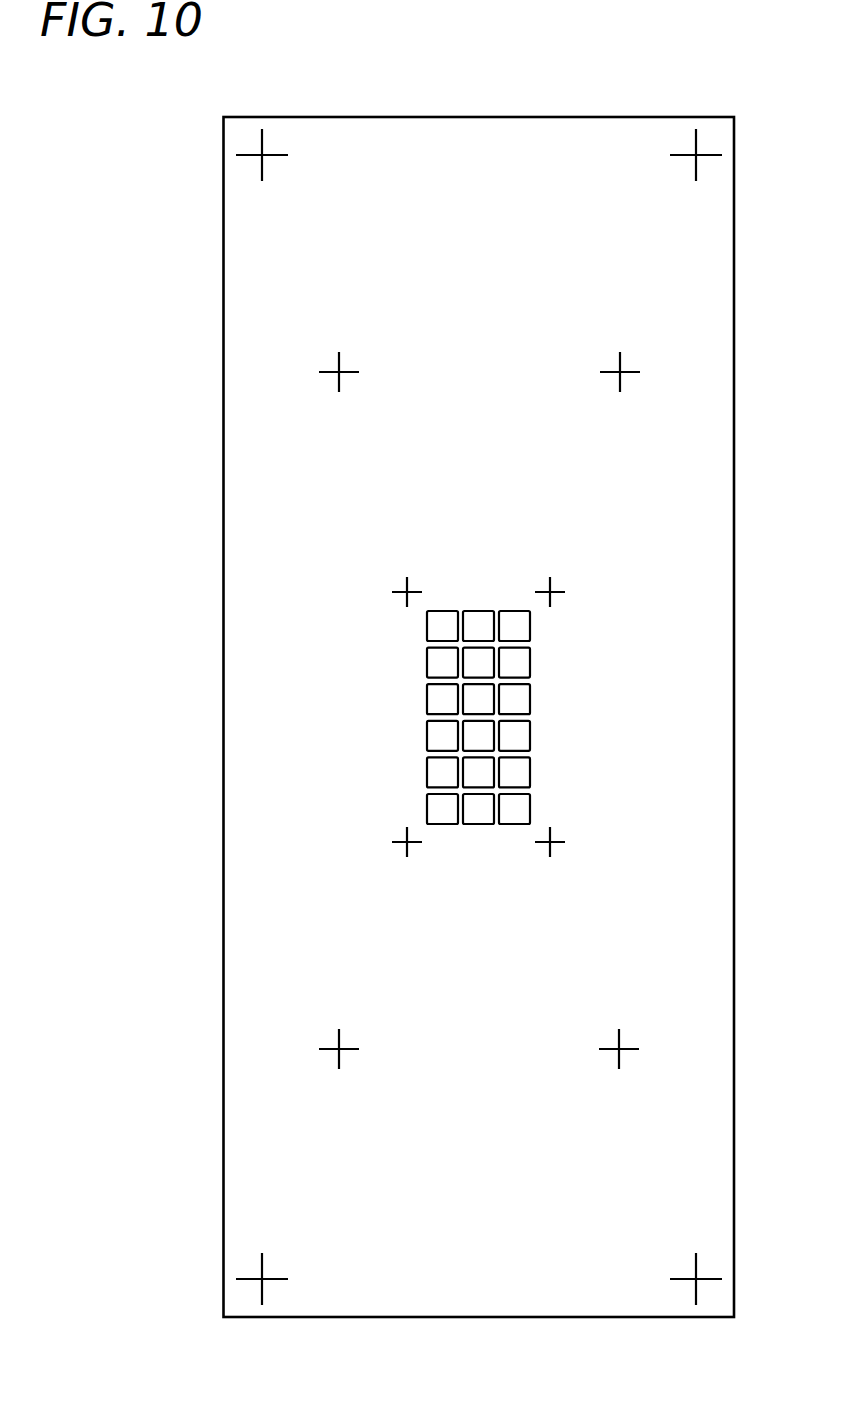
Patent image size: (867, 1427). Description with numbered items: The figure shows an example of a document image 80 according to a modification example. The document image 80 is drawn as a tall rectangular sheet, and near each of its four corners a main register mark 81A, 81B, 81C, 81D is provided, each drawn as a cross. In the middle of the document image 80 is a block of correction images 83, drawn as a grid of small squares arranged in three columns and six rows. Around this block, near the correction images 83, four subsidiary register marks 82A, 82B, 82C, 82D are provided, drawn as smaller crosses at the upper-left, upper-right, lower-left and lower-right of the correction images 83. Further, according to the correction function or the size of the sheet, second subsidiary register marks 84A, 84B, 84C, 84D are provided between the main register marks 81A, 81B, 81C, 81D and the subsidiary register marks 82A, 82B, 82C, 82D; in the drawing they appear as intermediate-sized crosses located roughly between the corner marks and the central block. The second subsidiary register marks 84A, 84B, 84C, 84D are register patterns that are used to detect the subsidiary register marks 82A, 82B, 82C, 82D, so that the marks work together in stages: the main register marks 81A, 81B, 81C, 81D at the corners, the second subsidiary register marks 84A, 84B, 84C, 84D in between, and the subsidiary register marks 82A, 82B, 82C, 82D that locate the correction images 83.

The document image 80 is at (477, 117).
The main register mark 81A is at (270, 155).
The main register mark 81B is at (708, 152).
The main register mark 81C is at (270, 1273).
The main register mark 81D is at (705, 1273).
The subsidiary register mark 82A is at (417, 588).
The subsidiary register mark 82B is at (562, 588).
The subsidiary register mark 82C is at (413, 845).
The subsidiary register mark 82D is at (560, 845).
The correction images 83 is at (477, 611).
The second subsidiary register mark 84A is at (350, 364).
The second subsidiary register mark 84B is at (630, 364).
The second subsidiary register mark 84C is at (350, 1053).
The second subsidiary register mark 84D is at (630, 1053).